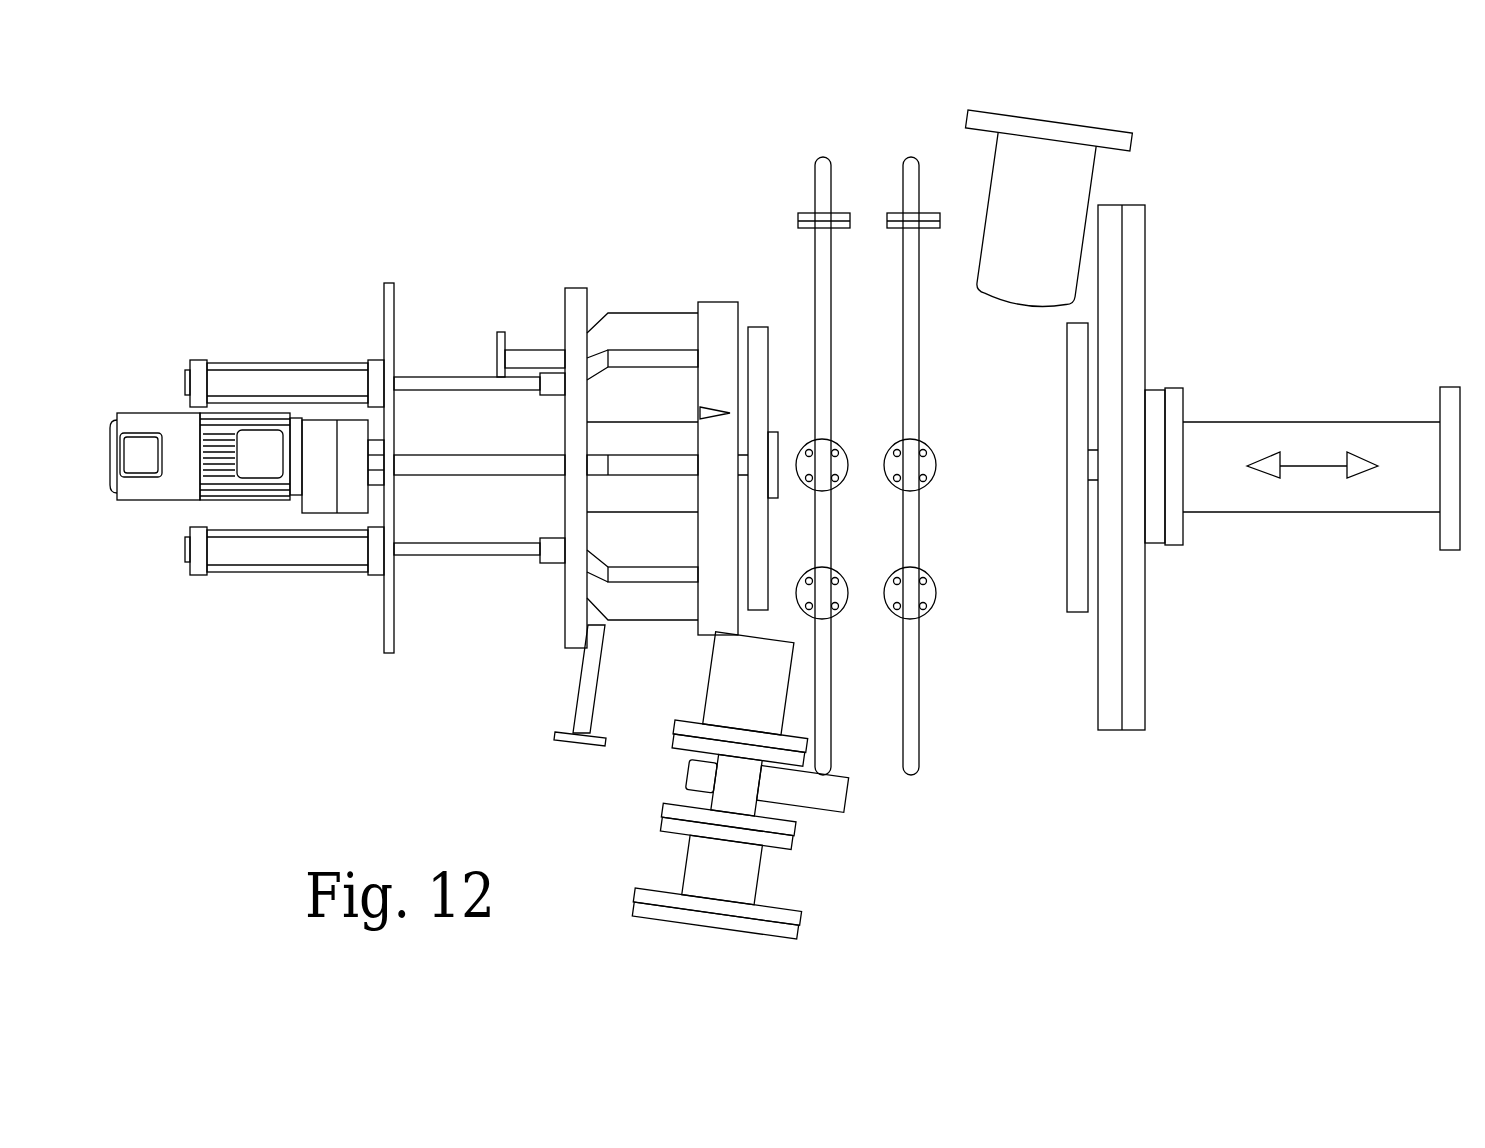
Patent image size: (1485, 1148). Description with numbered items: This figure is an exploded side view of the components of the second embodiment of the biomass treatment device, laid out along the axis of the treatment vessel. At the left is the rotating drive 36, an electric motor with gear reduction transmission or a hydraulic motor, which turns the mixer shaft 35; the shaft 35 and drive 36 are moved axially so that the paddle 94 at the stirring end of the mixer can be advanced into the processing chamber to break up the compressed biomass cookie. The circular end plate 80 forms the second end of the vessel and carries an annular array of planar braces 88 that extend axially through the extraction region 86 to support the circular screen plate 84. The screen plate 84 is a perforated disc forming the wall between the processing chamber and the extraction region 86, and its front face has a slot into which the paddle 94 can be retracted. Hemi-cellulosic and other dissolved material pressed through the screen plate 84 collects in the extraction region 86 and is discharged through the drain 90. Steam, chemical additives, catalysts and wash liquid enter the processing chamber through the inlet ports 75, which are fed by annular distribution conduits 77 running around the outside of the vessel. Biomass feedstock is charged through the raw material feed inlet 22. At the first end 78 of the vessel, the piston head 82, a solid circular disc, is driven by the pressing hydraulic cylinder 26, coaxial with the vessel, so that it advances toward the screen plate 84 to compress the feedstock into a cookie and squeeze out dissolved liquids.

The raw material feed inlet 22 is at (1043, 170).
The pressing hydraulic cylinder 26 is at (1237, 430).
The mixer shaft 35 is at (457, 463).
The rotating drive 36 is at (145, 420).
The inlet ports 75 is at (932, 587).
The annular distribution conduits 77 is at (910, 193).
The first end of the vessel 78 is at (1097, 290).
The circular end plate 80 is at (580, 293).
The piston head 82 is at (1073, 575).
The screen plate 84 is at (720, 313).
The extraction region 86 is at (612, 497).
The planar braces 88 is at (655, 545).
The drain 90 is at (558, 733).
The paddle 94 is at (763, 327).